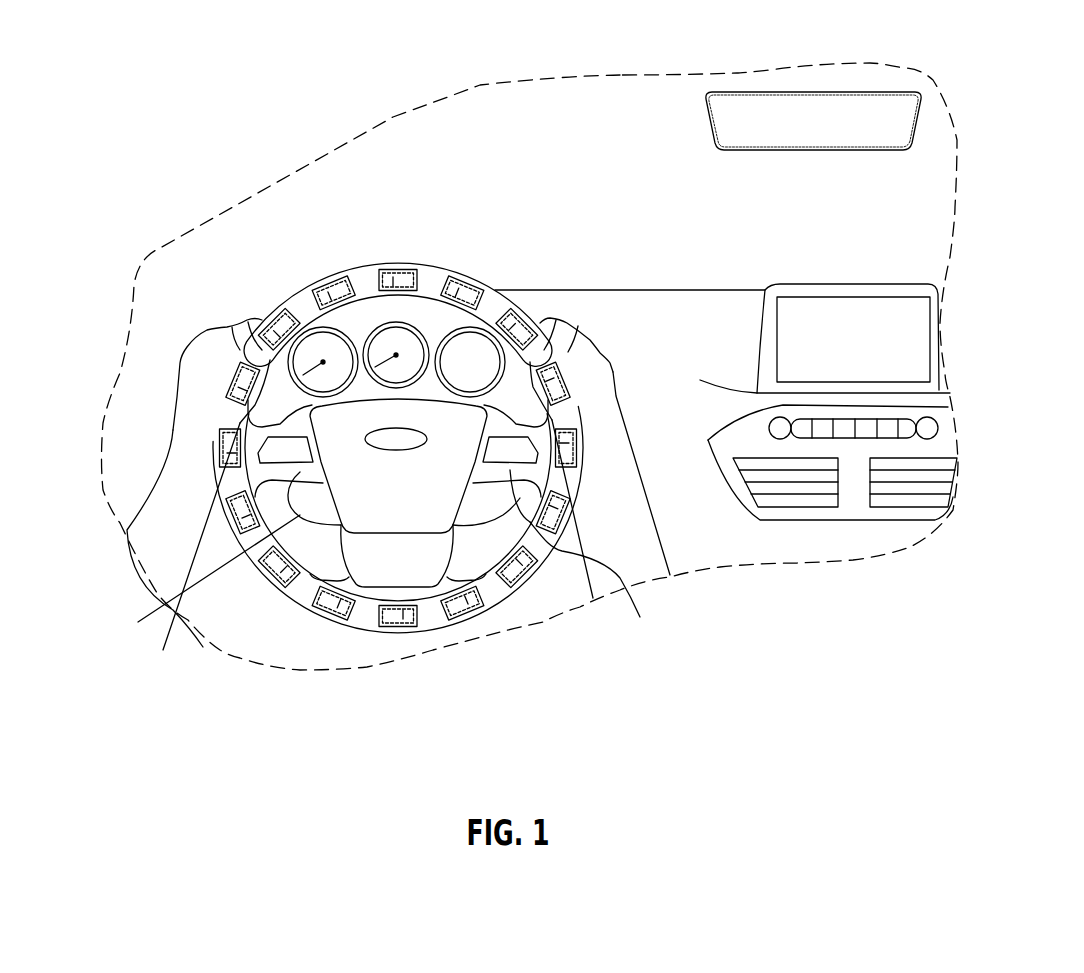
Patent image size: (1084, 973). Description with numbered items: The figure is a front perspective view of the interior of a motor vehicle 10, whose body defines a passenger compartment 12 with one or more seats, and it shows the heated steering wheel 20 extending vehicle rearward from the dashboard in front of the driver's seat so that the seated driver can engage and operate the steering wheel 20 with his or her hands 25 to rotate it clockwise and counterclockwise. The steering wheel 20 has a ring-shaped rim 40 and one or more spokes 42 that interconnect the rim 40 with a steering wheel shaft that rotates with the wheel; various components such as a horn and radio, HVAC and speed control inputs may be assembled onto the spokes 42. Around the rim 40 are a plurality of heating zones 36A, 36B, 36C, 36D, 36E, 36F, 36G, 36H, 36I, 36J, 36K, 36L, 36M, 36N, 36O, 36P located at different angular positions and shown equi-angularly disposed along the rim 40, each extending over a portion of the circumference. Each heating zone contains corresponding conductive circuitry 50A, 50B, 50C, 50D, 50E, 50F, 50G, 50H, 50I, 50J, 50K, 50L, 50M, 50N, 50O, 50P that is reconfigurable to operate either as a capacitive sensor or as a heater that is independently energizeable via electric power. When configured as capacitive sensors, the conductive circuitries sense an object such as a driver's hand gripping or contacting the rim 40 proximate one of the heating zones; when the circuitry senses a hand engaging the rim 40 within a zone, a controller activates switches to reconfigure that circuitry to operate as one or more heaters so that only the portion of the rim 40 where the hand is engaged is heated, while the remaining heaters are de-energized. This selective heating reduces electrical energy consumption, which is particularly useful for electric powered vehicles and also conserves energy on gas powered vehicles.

The motor vehicle 10 is at (168, 133).
The passenger compartment 12 is at (540, 160).
The heated steering wheel 20 is at (357, 250).
The hands 25 is at (173, 347).
The rim 40 is at (297, 303).
The spokes 42 is at (392, 511).
The heating zone 36A is at (385, 268).
The heating zone 36B is at (458, 290).
The heating zone 36C is at (518, 322).
The heating zone 36D is at (573, 367).
The heating zone 36E is at (575, 442).
The heating zone 36F is at (568, 512).
The heating zone 36G is at (525, 562).
The heating zone 36H is at (460, 610).
The heating zone 36I is at (404, 626).
The heating zone 36J is at (343, 618).
The heating zone 36K is at (290, 590).
The heating zone 36L is at (233, 523).
The heating zone 36M is at (222, 462).
The heating zone 36N is at (227, 387).
The heating zone 36O is at (270, 330).
The heating zone 36P is at (328, 292).
The conductive circuitry 50A is at (396, 268).
The conductive circuitry 50B is at (472, 287).
The conductive circuitry 50C is at (530, 318).
The conductive circuitry 50D is at (577, 377).
The conductive circuitry 50E is at (577, 447).
The conductive circuitry 50F is at (567, 520).
The conductive circuitry 50G is at (524, 578).
The conductive circuitry 50H is at (457, 622).
The conductive circuitry 50I is at (387, 628).
The conductive circuitry 50J is at (315, 613).
The conductive circuitry 50K is at (268, 578).
The conductive circuitry 50L is at (227, 503).
The conductive circuitry 50M is at (217, 440).
The conductive circuitry 50N is at (240, 370).
The conductive circuitry 50O is at (278, 318).
The conductive circuitry 50P is at (342, 278).